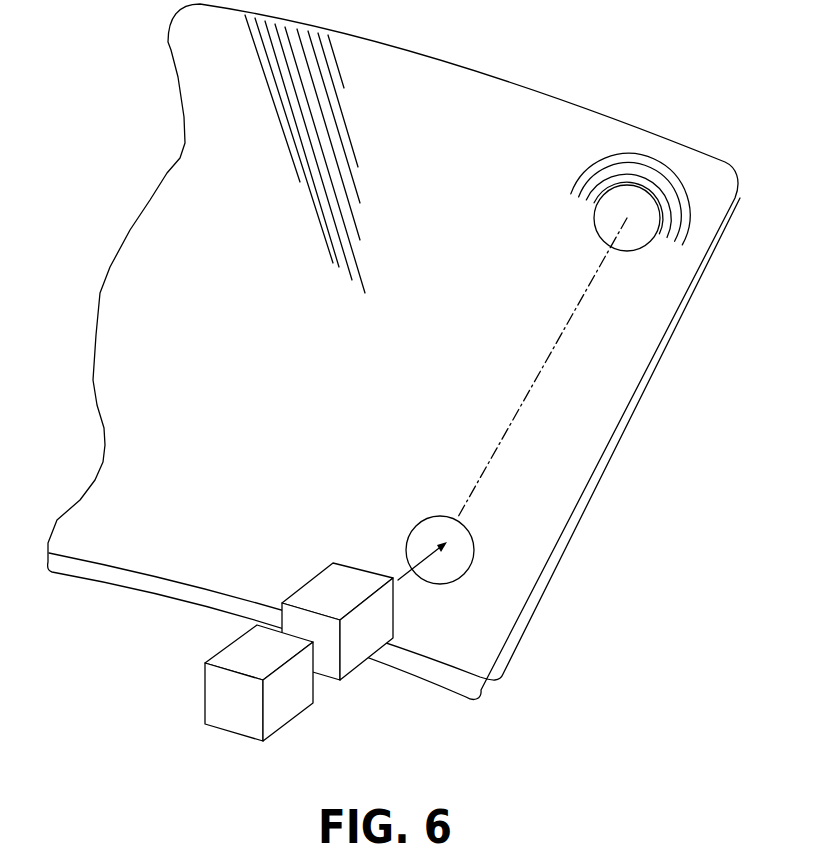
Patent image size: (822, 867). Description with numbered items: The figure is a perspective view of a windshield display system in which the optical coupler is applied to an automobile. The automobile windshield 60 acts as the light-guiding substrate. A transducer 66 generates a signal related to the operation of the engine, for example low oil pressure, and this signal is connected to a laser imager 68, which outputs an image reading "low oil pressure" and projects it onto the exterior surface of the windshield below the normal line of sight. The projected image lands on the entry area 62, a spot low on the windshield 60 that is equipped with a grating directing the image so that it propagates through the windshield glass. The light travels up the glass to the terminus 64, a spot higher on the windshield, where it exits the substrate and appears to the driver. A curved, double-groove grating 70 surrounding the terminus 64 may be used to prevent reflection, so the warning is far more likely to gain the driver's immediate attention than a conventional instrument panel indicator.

The automobile windshield 60 is at (642, 388).
The entry area 62 is at (440, 519).
The terminus 64 is at (610, 219).
The transducer 66 is at (218, 692).
The laser imager 68 is at (330, 588).
The curved, double-groove grating 70 is at (635, 154).